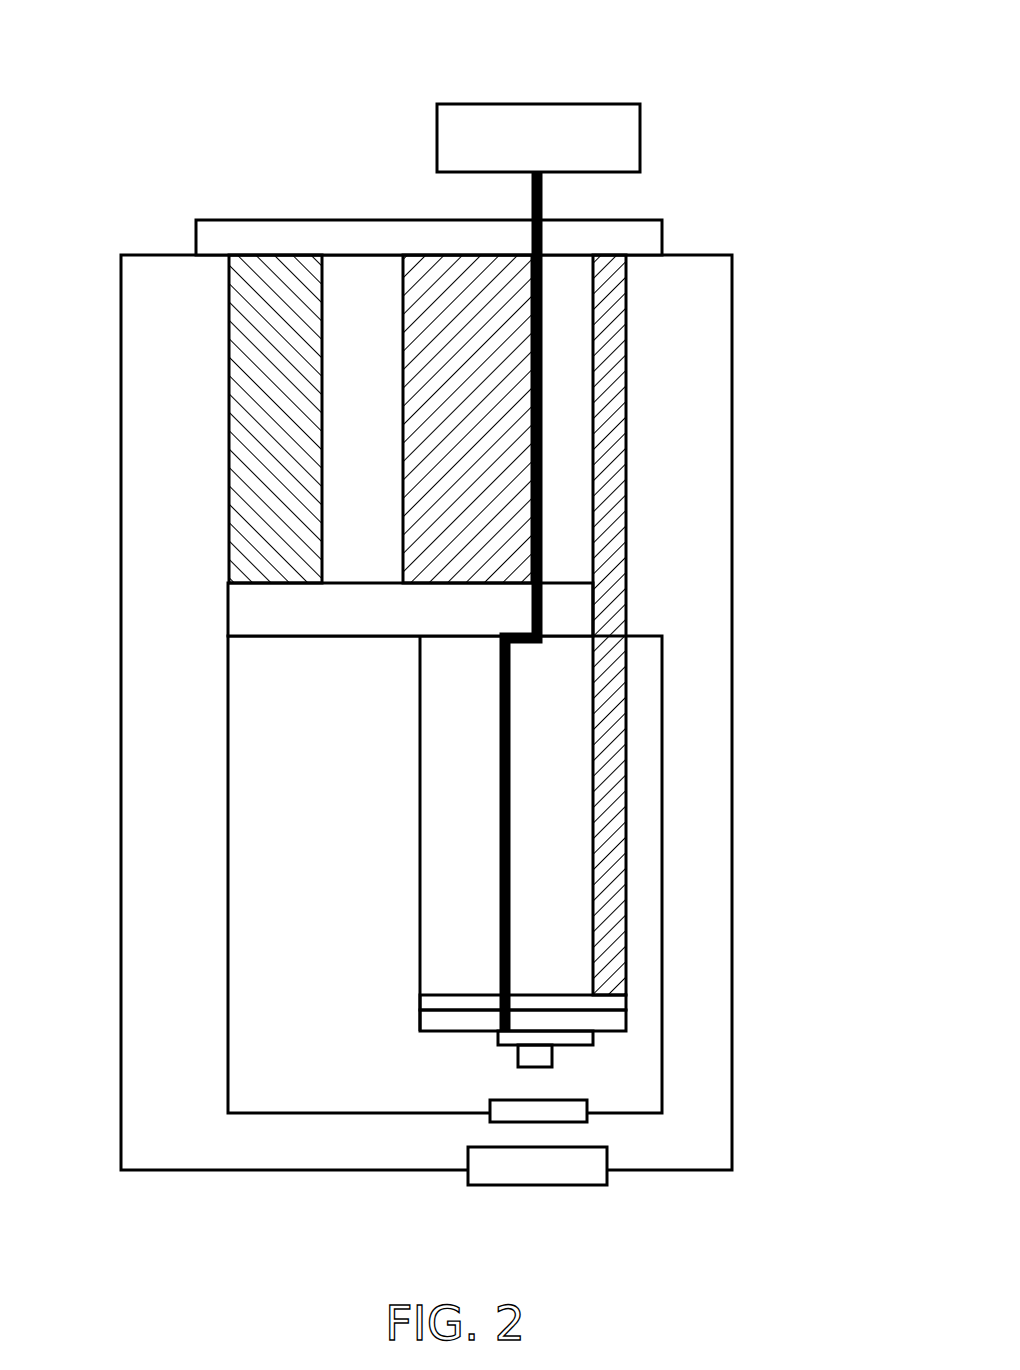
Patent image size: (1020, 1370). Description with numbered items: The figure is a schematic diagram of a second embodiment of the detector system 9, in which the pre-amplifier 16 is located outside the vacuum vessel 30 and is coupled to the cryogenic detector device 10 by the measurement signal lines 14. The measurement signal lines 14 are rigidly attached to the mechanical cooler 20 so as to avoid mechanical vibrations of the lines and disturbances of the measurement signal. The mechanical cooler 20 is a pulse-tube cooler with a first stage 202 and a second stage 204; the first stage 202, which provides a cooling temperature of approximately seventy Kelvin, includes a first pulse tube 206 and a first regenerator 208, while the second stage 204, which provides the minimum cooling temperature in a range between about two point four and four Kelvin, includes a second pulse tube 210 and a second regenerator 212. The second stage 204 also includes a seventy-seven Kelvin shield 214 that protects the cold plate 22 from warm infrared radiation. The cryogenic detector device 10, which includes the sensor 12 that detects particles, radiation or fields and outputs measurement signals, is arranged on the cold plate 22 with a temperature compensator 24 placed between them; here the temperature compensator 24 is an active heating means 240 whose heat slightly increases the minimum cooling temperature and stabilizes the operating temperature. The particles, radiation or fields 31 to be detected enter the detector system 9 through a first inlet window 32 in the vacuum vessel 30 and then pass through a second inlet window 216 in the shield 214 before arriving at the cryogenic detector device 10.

The detector system 9 is at (398, 52).
The pre-amplifier 16 is at (538, 138).
The measurement signal lines 14 is at (543, 208).
The vacuum vessel 30 is at (290, 1171).
The mechanical cooler 20 is at (510, 625).
The first stage 202 is at (410, 609).
The first pulse tube 206 is at (275, 419).
The first regenerator 208 is at (467, 419).
The second pulse tube 210 is at (627, 540).
The 77-K shield 214 is at (228, 855).
The second regenerator 212 is at (452, 833).
The second stage 204 is at (550, 807).
The cold plate 22 is at (420, 1003).
The active heating means 240 is at (420, 1022).
The temperature compensator 24 is at (626, 1020).
The sensor 12 is at (552, 1055).
The cryogenic detector device 10 is at (623, 1047).
The second inlet window 216 is at (490, 1106).
The first inlet window 32 is at (537, 1166).
The particles, radiation or fields 31 is at (535, 1196).